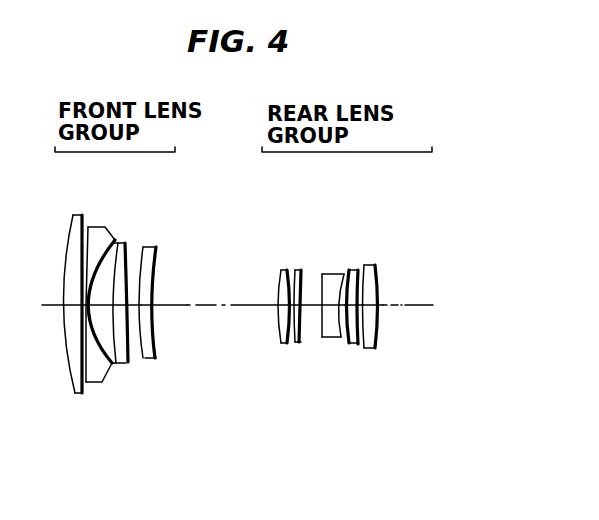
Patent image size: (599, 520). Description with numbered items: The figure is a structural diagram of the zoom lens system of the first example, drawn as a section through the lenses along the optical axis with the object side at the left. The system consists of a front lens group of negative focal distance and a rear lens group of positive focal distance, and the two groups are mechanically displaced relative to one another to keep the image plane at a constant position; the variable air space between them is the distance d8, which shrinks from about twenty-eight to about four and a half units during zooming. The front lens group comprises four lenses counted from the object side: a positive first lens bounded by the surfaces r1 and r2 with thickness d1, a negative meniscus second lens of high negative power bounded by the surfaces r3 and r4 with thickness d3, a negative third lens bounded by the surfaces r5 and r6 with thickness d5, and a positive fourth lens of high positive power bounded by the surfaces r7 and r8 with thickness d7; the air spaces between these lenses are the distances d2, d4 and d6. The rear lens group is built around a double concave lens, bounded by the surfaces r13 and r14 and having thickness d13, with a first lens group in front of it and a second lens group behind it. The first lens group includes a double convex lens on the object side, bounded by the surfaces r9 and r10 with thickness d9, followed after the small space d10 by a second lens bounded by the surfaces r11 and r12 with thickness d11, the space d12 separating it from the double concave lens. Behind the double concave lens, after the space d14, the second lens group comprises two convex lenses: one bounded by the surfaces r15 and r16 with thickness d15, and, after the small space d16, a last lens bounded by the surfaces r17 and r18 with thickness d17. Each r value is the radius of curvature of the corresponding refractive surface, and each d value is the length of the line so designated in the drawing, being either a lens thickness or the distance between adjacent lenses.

The radius of curvature of first refractive surface r1 is at (68, 233).
The radius of curvature of second refractive surface r2 is at (78, 213).
The radius of curvature of third refractive surface r3 is at (85, 226).
The radius of curvature of fourth refractive surface r4 is at (108, 245).
The radius of curvature of fifth refractive surface r5 is at (121, 244).
The radius of curvature of sixth refractive surface r6 is at (131, 246).
The radius of curvature of seventh refractive surface r7 is at (144, 246).
The radius of curvature of eighth refractive surface r8 is at (157, 252).
The radius of curvature of ninth refractive surface r9 is at (278, 274).
The radius of curvature of tenth refractive surface r10 is at (284, 268).
The radius of curvature of eleventh refractive surface r11 is at (296, 270).
The radius of curvature of twelfth refractive surface r12 is at (303, 276).
The radius of curvature of thirteenth refractive surface r13 is at (322, 272).
The radius of curvature of fourteenth refractive surface r14 is at (343, 274).
The radius of curvature of fifteenth refractive surface r15 is at (355, 269).
The radius of curvature of sixteenth refractive surface r16 is at (361, 268).
The radius of curvature of seventeenth refractive surface r17 is at (377, 268).
The radius of curvature of eighteenth refractive surface r18 is at (378, 288).
The thickness of first lens d1 is at (72, 312).
The distance between first and second lenses d2 is at (80, 312).
The thickness of second lens d3 is at (98, 309).
The distance between second and third lenses d4 is at (89, 311).
The thickness of third lens d5 is at (103, 311).
The distance between third and fourth lenses d6 is at (140, 311).
The thickness of fourth lens d7 is at (145, 312).
The distance between front and rear lens groups d8 is at (210, 307).
The thickness of double convex lens d9 is at (279, 313).
The distance between first and second lenses of rear group d10 is at (289, 318).
The thickness of second lens of rear group d11 is at (297, 318).
The distance between second lens and double concave lens d12 is at (311, 318).
The thickness of double concave lens d13 is at (333, 318).
The distance between double concave lens and first convex lens d14 is at (345, 320).
The thickness of first convex lens of second lens group d15 is at (355, 320).
The distance between convex lenses of second lens group d16 is at (361, 318).
The thickness of last convex lens d17 is at (369, 318).